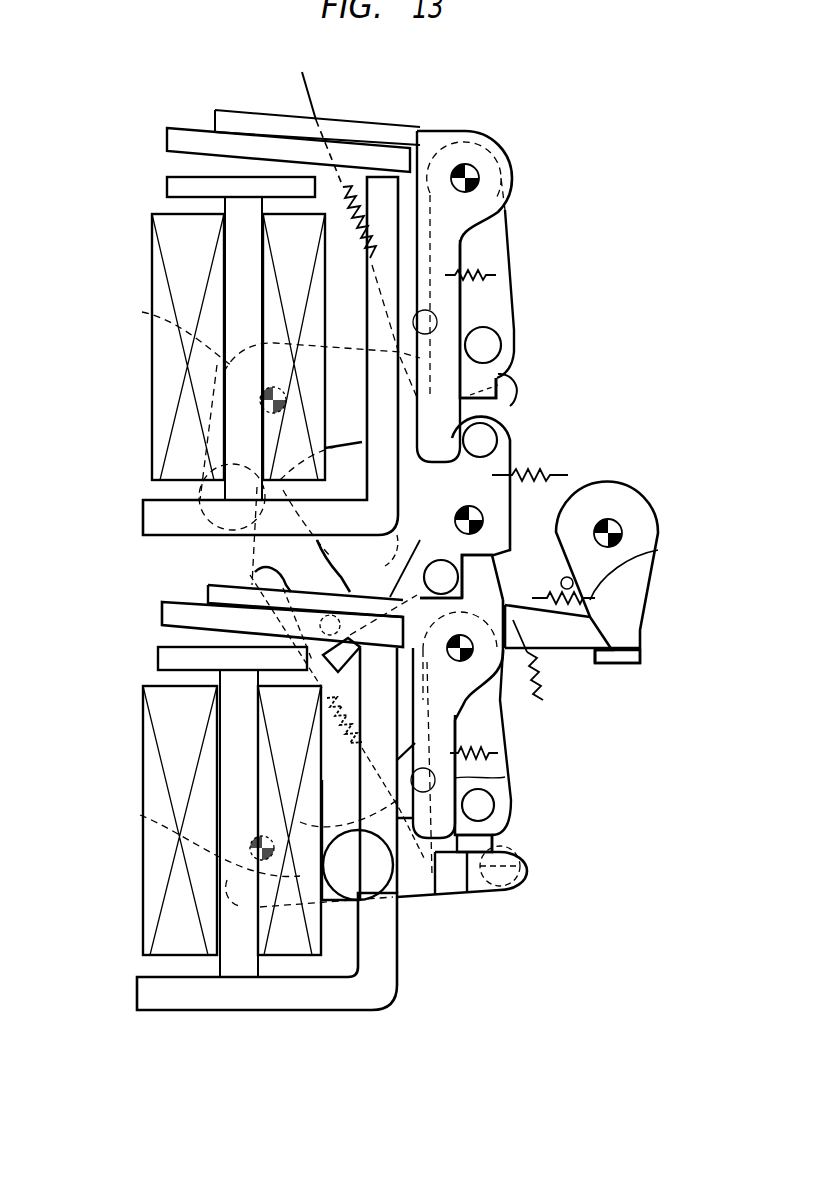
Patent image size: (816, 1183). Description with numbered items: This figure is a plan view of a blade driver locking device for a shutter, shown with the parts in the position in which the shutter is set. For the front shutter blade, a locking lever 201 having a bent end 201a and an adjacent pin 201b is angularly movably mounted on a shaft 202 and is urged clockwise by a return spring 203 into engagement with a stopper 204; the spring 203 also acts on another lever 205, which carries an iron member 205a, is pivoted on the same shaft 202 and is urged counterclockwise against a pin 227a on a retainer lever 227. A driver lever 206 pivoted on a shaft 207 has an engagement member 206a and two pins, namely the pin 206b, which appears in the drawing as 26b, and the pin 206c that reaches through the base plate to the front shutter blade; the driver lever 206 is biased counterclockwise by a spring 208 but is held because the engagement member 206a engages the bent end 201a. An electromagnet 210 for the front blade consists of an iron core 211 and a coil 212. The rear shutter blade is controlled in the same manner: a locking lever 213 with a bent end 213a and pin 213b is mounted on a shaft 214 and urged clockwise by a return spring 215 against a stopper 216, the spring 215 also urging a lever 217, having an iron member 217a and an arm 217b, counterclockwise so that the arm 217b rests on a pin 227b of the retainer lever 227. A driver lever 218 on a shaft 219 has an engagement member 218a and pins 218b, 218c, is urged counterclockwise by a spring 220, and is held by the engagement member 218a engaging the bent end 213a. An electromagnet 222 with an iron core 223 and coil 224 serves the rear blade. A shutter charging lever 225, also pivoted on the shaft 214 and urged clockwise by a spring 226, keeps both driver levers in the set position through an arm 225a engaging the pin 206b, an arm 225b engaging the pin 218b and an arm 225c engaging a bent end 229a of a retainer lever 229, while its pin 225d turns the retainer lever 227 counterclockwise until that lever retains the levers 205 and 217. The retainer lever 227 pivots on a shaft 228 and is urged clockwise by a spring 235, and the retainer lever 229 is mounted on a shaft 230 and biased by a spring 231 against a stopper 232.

The locking lever 201 is at (488, 316).
The bent end 201a is at (488, 394).
The pin 201b is at (487, 350).
The shaft 202 is at (470, 172).
The return spring 203 is at (481, 275).
The stopper 204 is at (418, 305).
The lever 205 is at (440, 300).
The iron member 205a is at (166, 139).
The driver lever 206 is at (347, 367).
The engagement member 206a is at (390, 565).
The pin 206b is at (197, 520).
The yoke hinge 26b is at (232, 497).
The pin 206c is at (506, 393).
The shaft 207 is at (142, 314).
The spring 208 is at (340, 72).
The electromagnet 210 is at (143, 208).
The iron core 211 is at (160, 511).
The coil 212 is at (165, 399).
The locking lever 213 is at (490, 776).
The bent end 213a is at (493, 838).
The pin 213b is at (481, 805).
The shaft 214 is at (466, 637).
The return spring 215 is at (486, 753).
The stopper 216 is at (413, 893).
The lever 217 is at (456, 778).
The iron member 217a is at (166, 604).
The arm 217b is at (485, 573).
The driver lever 218 is at (396, 930).
The engagement member 218a is at (455, 880).
The pin 218b is at (352, 985).
The pin 218c is at (501, 863).
The shaft 219 is at (262, 862).
The spring 220 is at (388, 902).
The electromagnet 222 is at (125, 691).
The iron core 223 is at (300, 990).
The coil 224 is at (158, 838).
The shutter charging lever 225 is at (520, 634).
The arm 225a is at (254, 548).
The arm 225b is at (158, 828).
The arm 225c is at (619, 665).
The pin 225d is at (355, 566).
The spring 226 is at (541, 682).
The retainer lever 227 is at (490, 476).
The pin 227a is at (483, 443).
The pin 227b is at (453, 571).
The shaft 228 is at (479, 515).
The retainer lever 229 is at (624, 604).
The bent end 229a is at (641, 661).
The shaft 230 is at (614, 531).
The spring 231 is at (624, 578).
The stopper 232 is at (568, 577).
The spring 235 is at (556, 475).